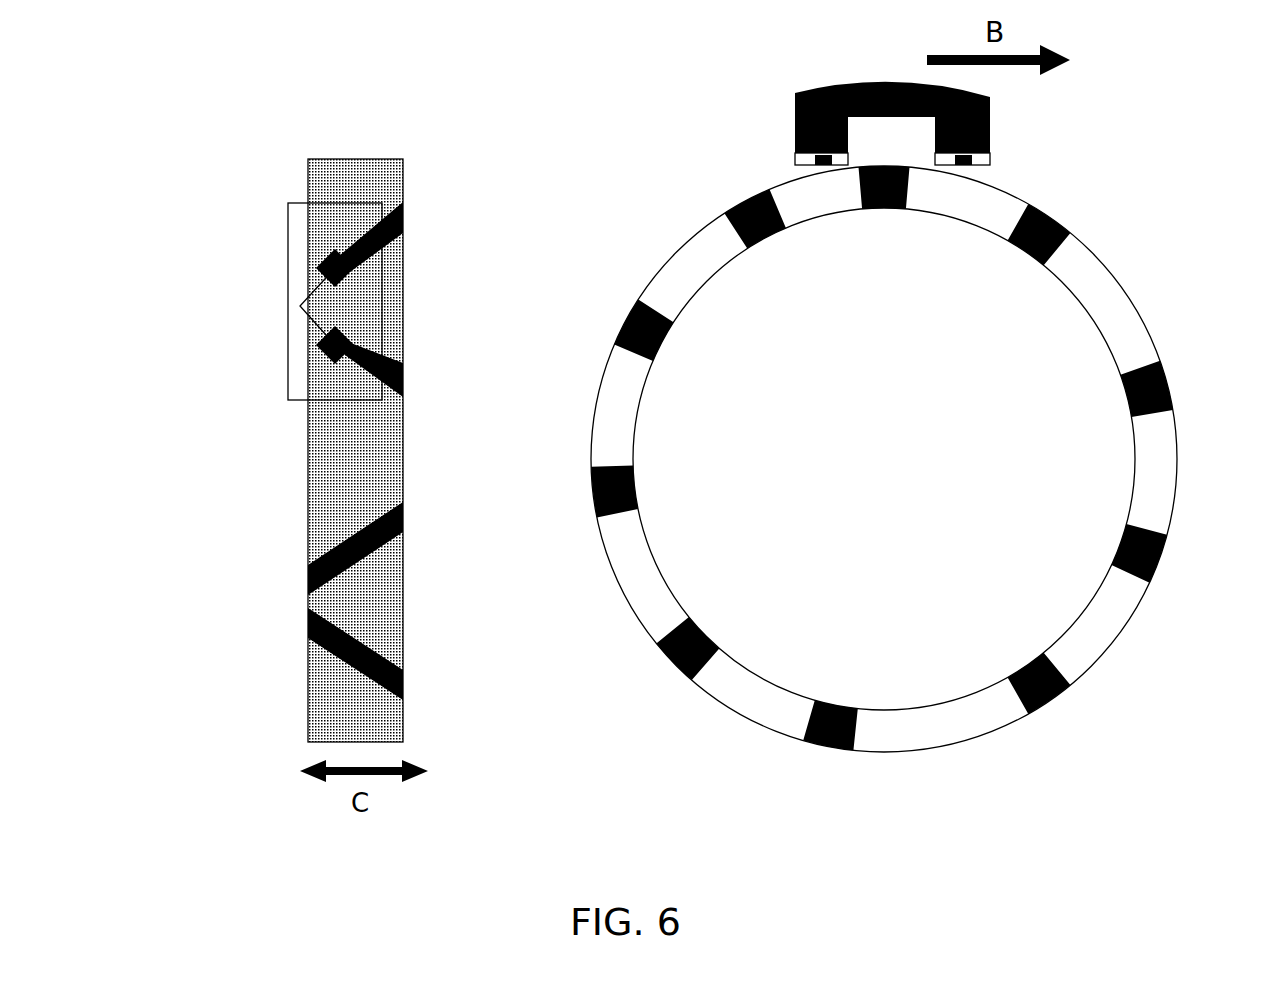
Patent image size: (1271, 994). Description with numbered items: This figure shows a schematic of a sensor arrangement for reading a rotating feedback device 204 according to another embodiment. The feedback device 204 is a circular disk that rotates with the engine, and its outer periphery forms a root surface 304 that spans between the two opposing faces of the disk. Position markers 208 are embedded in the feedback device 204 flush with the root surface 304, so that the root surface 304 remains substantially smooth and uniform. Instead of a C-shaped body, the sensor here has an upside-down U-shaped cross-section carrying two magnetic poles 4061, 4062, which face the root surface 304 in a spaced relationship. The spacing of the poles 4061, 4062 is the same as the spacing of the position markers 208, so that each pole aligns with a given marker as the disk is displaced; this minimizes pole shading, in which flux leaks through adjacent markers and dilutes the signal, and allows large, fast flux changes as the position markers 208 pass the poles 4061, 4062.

The feedback device 204 is at (1125, 305).
The position markers 208 is at (1147, 373).
The root surface 304 is at (385, 187).
The first magnetic pole 4061 is at (216, 285).
The second magnetic pole 4062 is at (886, 294).